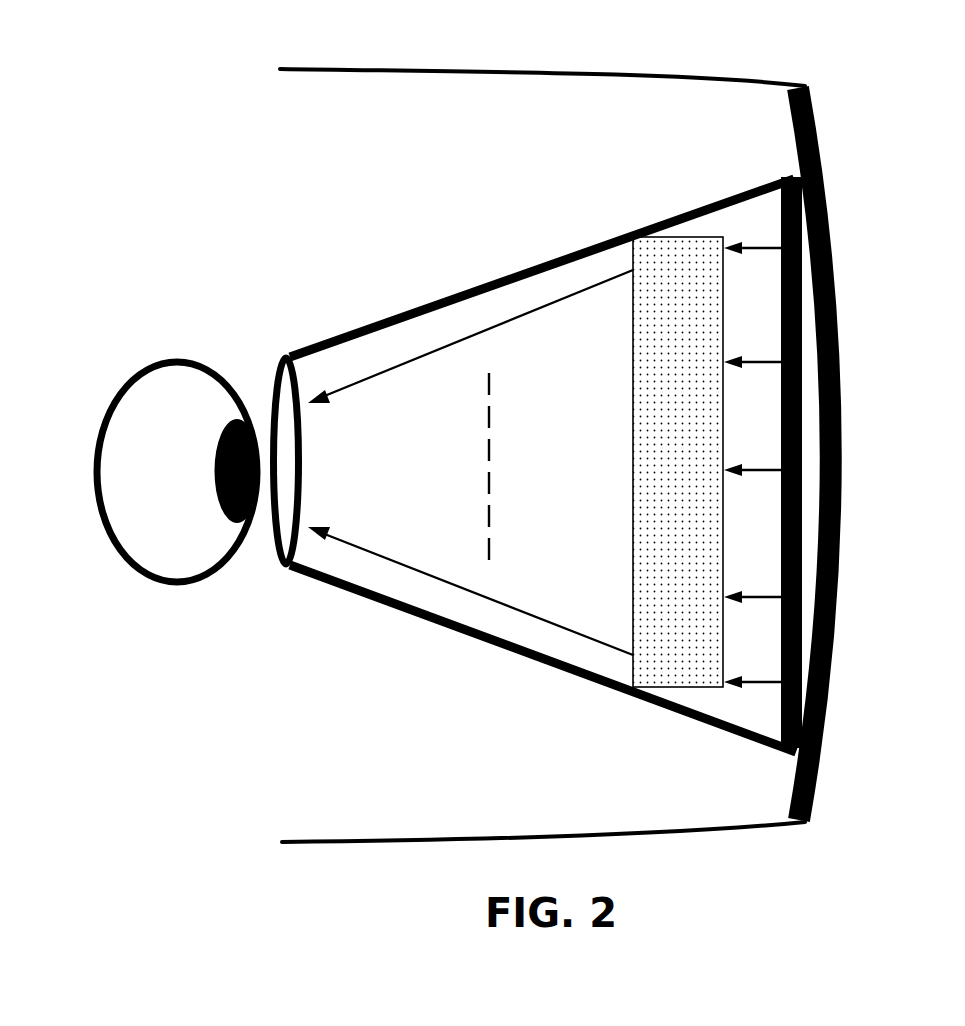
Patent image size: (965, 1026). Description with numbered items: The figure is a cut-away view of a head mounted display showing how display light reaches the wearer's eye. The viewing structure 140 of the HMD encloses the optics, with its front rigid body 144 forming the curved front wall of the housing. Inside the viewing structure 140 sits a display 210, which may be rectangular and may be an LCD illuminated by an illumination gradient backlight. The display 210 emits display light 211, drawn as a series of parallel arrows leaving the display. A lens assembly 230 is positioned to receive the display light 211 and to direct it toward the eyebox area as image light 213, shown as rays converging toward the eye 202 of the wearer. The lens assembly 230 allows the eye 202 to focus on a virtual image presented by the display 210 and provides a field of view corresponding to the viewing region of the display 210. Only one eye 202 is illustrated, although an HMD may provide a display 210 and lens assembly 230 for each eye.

The viewing structure 140 is at (470, 69).
The front rigid body 144 is at (800, 178).
The eye 202 is at (149, 350).
The display 210 is at (782, 183).
The display light 211 is at (752, 479).
The image light 213 is at (470, 462).
The lens assembly 230 is at (678, 462).